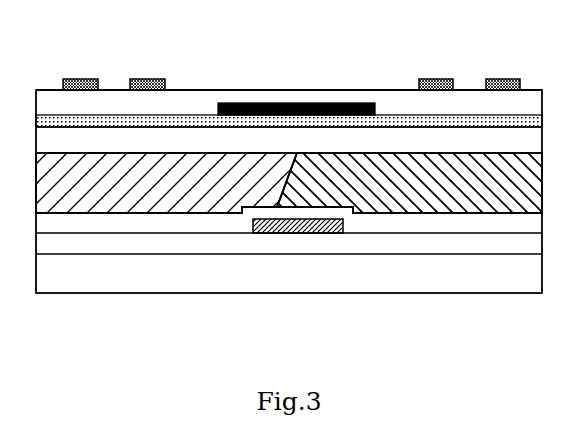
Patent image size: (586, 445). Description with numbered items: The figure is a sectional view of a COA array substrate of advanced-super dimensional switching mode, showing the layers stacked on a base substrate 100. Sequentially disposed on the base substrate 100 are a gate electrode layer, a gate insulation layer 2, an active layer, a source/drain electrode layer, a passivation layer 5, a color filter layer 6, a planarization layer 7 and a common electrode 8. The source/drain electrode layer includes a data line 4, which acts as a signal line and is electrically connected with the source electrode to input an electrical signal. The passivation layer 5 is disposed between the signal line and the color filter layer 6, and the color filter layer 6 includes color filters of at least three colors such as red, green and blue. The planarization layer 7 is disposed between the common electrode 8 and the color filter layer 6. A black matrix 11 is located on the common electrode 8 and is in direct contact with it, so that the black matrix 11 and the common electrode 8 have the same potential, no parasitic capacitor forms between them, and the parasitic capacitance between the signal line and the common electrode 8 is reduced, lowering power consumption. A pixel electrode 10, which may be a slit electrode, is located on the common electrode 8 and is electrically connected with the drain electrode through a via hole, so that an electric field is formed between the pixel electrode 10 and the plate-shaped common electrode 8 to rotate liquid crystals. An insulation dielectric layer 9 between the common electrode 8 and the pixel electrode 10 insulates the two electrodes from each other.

The base substrate 100 is at (107, 275).
The gate insulation layer 2 is at (195, 240).
The data line 4 is at (303, 233).
The passivation layer 5 is at (401, 227).
The color filter layer 6 is at (481, 189).
The planarization layer 7 is at (117, 142).
The common electrode 8 is at (195, 113).
The insulation dielectric layer 9 is at (403, 96).
The pixel electrode 10 is at (503, 79).
The black matrix 11 is at (305, 103).